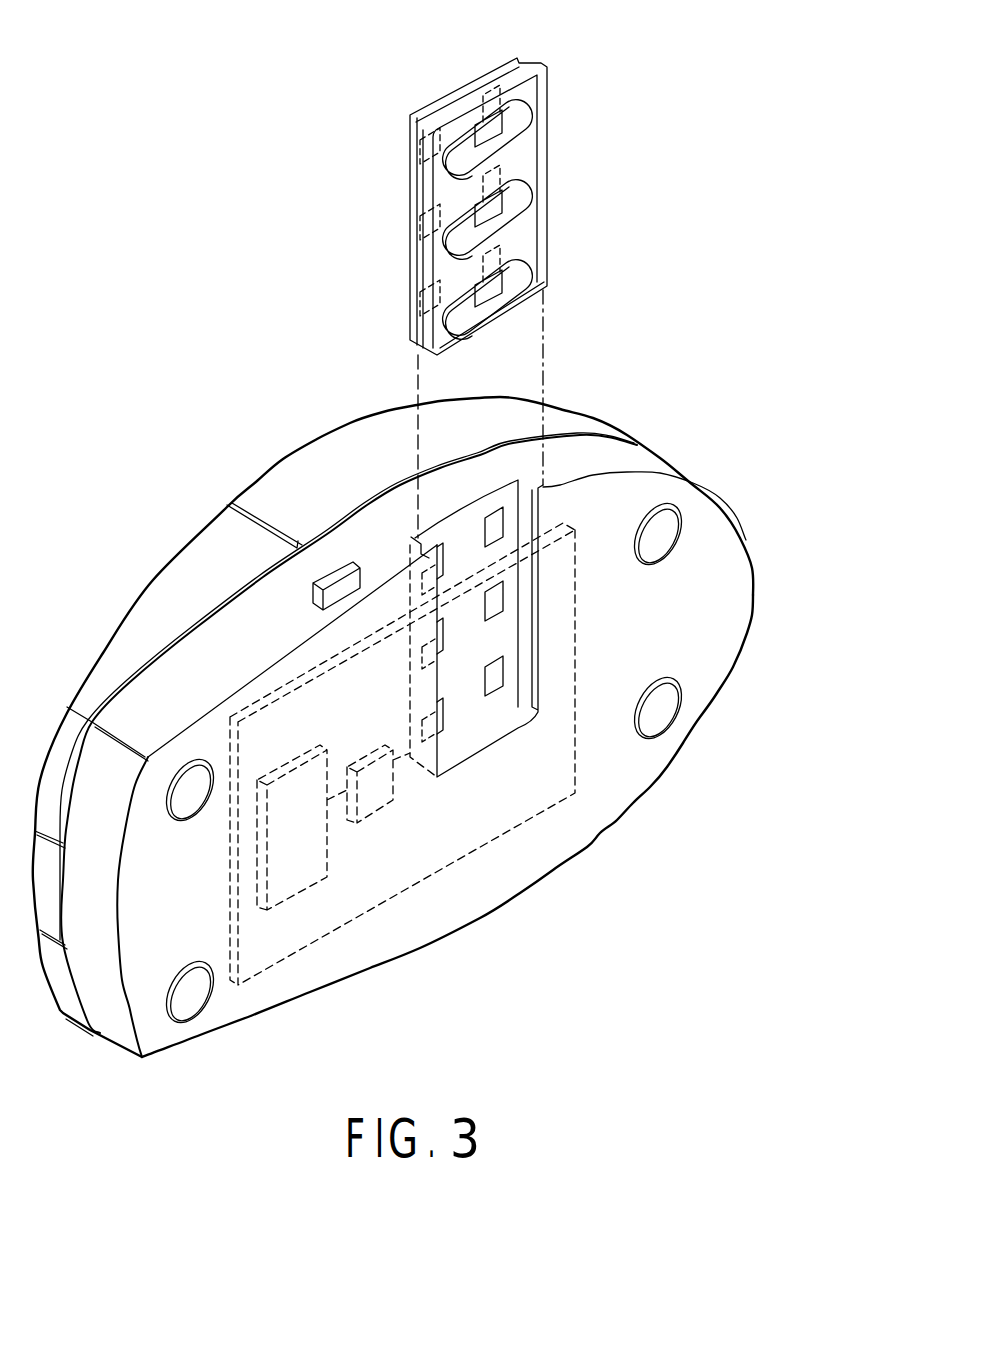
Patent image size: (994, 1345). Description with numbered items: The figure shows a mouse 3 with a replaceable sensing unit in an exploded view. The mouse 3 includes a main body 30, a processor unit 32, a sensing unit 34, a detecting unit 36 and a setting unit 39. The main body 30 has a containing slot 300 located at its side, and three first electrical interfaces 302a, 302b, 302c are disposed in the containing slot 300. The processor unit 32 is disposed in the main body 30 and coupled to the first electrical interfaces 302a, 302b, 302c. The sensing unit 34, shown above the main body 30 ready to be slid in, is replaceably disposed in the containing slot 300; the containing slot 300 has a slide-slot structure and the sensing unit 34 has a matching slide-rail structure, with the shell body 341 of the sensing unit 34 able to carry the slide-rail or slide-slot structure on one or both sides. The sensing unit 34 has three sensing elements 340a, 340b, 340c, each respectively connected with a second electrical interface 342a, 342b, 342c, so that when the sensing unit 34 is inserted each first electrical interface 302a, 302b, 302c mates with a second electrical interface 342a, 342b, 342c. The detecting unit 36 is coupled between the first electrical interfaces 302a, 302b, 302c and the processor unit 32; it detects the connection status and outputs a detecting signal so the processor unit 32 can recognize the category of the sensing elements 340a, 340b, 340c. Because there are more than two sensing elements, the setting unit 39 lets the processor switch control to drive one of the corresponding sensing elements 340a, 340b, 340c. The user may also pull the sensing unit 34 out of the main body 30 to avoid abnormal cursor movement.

The mouse 3 is at (154, 106).
The main body 30 is at (142, 633).
The containing slot 300 is at (471, 637).
The first electrical interface 302a is at (500, 683).
The first electrical interface 302b is at (497, 604).
The first electrical interface 302c is at (495, 528).
The processor unit 32 is at (300, 853).
The sensing unit 34 is at (478, 184).
The sensing element 340a is at (520, 283).
The sensing element 340b is at (513, 207).
The sensing element 340c is at (517, 127).
The shell body 341 is at (513, 68).
The second electrical interface 342a is at (425, 303).
The second electrical interface 342b is at (425, 226).
The second electrical interface 342c is at (425, 150).
The detecting unit 36 is at (380, 790).
The setting unit 39 is at (338, 568).